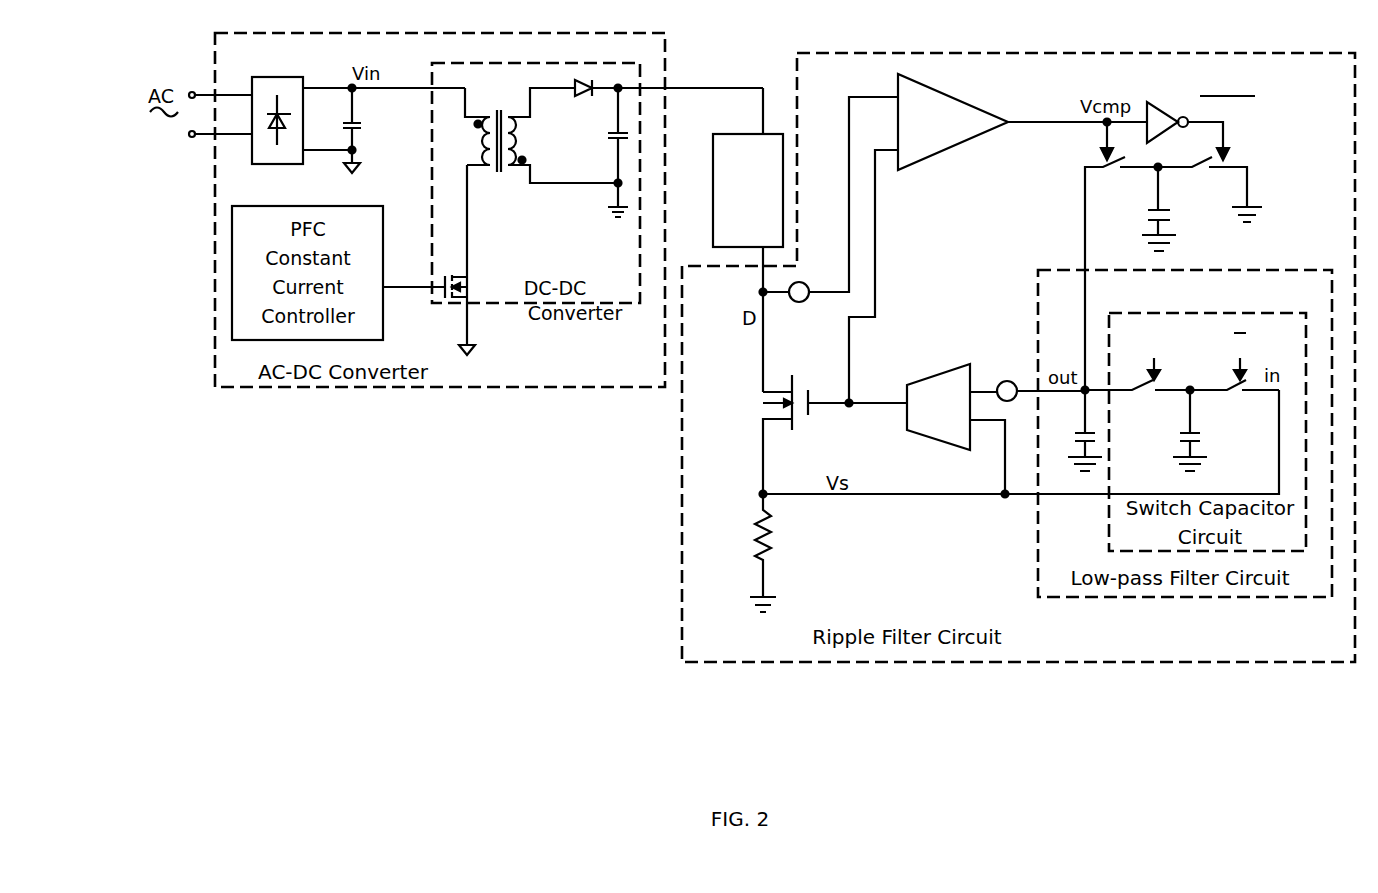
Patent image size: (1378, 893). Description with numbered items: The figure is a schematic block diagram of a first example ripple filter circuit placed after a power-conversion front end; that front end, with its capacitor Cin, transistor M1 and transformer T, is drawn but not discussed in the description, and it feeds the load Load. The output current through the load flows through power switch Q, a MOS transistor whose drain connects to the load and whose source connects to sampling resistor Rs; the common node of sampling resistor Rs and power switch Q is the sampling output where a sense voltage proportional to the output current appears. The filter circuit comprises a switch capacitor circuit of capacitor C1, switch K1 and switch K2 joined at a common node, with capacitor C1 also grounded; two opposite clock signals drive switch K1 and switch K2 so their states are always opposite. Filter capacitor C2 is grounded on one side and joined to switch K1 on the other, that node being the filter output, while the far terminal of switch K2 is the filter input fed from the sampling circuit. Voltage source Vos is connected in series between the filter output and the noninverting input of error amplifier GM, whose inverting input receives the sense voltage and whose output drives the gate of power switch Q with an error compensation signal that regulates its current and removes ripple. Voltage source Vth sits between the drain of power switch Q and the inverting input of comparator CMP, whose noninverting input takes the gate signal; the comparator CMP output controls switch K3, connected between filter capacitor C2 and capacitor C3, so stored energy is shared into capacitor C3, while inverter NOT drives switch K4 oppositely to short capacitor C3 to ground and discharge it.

The input capacitor Cin is at (368, 130).
The power switch transistor M1 is at (445, 260).
The transformer T is at (531, 135).
The load Load is at (748, 240).
The voltage source Vth is at (830, 216).
The comparator CMP is at (928, 238).
The inverter NOT is at (1199, 116).
The switch K3 is at (1121, 273).
The switch K4 is at (1210, 189).
The capacitor C3 is at (1169, 208).
The power switch Q is at (792, 434).
The error amplifier GM is at (956, 429).
The voltage source Vos is at (1036, 371).
The sampling resistor Rs is at (742, 553).
The filter capacitor C2 is at (1073, 430).
The switch K1 is at (1137, 377).
The switch K2 is at (1234, 376).
The capacitor C1 is at (1179, 429).